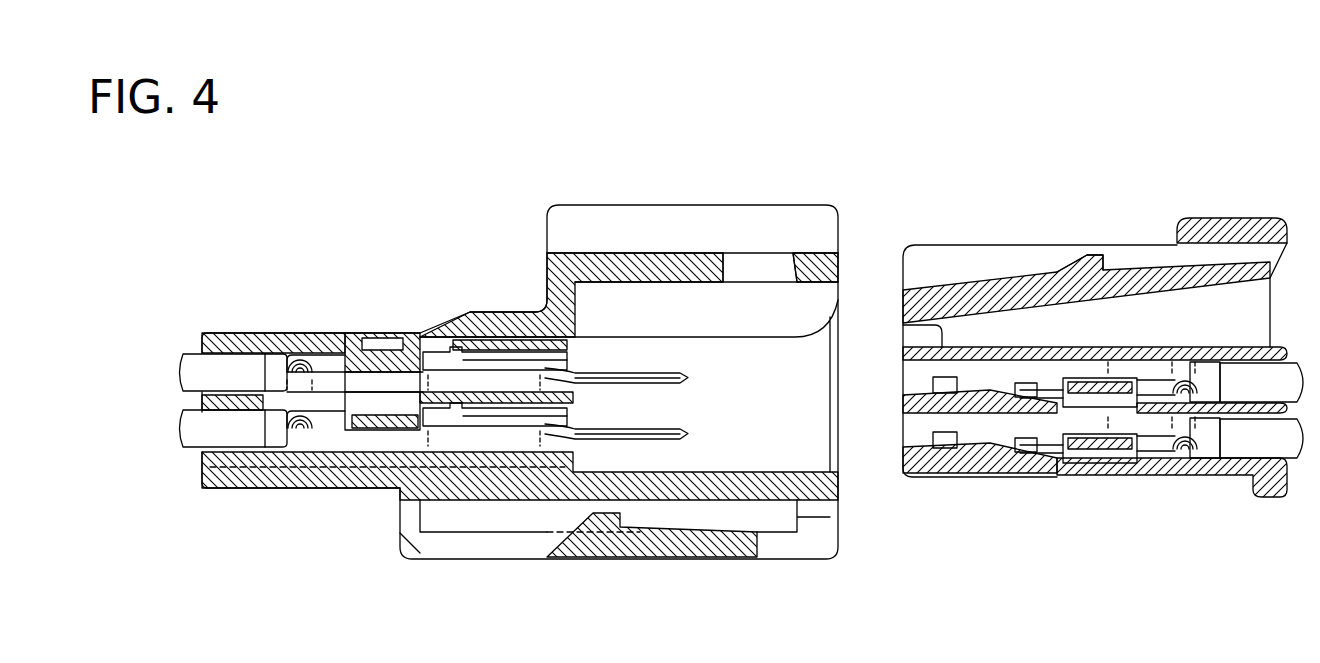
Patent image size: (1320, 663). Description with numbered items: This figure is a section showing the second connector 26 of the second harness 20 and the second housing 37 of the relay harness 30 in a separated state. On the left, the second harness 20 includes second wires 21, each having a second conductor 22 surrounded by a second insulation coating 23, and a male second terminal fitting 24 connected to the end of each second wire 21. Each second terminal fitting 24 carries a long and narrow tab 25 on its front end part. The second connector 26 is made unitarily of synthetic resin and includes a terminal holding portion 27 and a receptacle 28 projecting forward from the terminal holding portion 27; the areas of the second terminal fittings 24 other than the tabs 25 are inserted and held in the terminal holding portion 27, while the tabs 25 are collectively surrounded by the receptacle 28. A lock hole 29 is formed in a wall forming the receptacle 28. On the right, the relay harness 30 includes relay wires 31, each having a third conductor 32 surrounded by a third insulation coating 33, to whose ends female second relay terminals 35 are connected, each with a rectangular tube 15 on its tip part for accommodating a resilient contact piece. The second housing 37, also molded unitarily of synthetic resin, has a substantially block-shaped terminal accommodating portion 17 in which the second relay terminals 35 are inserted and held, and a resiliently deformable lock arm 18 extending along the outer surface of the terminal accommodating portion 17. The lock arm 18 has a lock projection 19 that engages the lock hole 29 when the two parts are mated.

The rectangular tube 15 is at (1002, 428).
The terminal accommodating portion 17 is at (1135, 355).
The lock arm 18 is at (1008, 288).
The lock projection 19 is at (1079, 258).
The second harness 20 is at (709, 115).
The second wire 21 is at (315, 552).
The second conductor 22 is at (300, 430).
The second insulation coating 23 is at (232, 430).
The second terminal fitting 24 is at (403, 435).
The tab 25 is at (680, 440).
The second connector 26 is at (488, 180).
The terminal holding portion 27 is at (468, 487).
The receptacle 28 is at (658, 495).
The lock hole 29 is at (724, 262).
The relay harness 30 is at (1003, 110).
The relay wire 31 is at (1258, 552).
The third conductor 32 is at (1180, 443).
The third insulation coating 33 is at (1243, 445).
The second relay terminal 35 is at (1090, 425).
The second housing 37 is at (1115, 198).